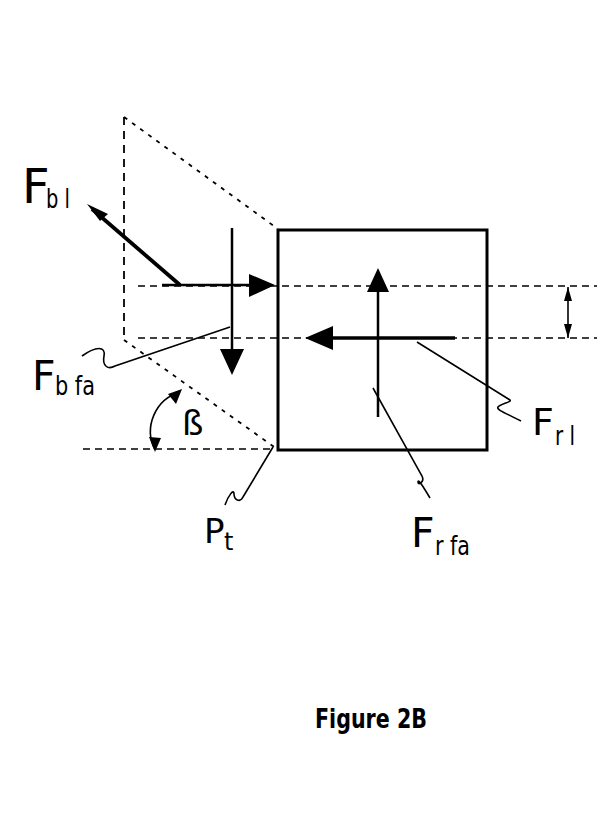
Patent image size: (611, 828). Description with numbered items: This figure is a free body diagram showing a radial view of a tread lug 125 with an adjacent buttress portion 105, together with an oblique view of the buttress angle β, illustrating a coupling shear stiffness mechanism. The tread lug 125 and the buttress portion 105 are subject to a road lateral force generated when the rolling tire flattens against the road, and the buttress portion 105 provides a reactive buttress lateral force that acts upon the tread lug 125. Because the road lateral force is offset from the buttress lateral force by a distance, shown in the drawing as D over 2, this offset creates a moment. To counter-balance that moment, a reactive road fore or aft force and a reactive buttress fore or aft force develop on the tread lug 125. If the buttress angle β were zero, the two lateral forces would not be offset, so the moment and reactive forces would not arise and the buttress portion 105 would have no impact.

The buttress portion 105 is at (168, 202).
The tread lug 125 is at (413, 272).
The half-diameter dimension D/ 2 is at (586, 333).